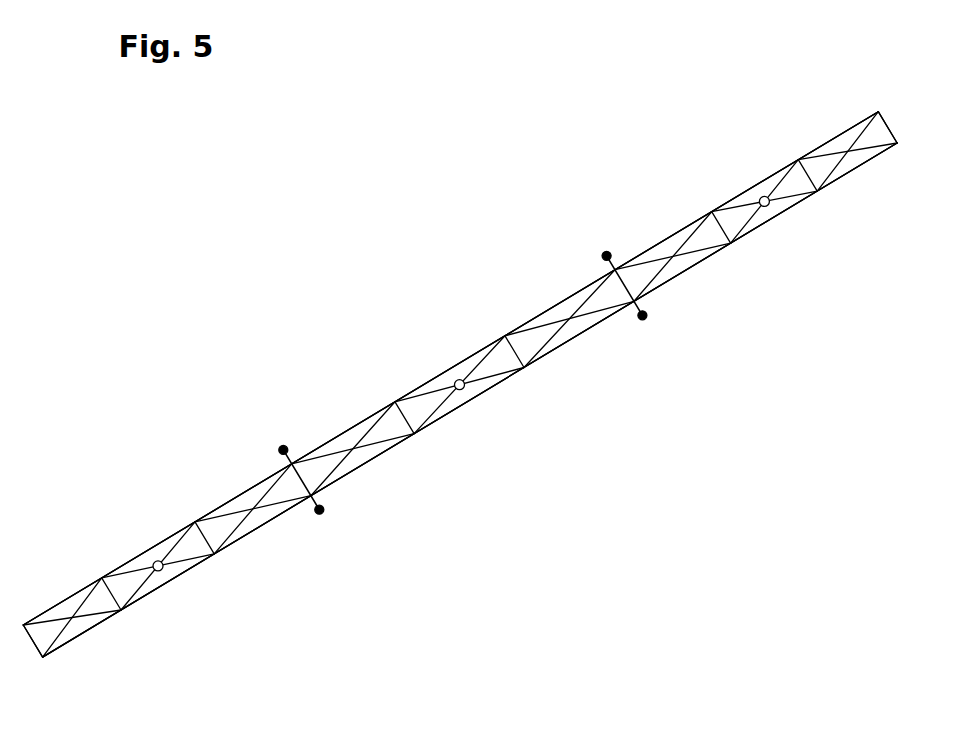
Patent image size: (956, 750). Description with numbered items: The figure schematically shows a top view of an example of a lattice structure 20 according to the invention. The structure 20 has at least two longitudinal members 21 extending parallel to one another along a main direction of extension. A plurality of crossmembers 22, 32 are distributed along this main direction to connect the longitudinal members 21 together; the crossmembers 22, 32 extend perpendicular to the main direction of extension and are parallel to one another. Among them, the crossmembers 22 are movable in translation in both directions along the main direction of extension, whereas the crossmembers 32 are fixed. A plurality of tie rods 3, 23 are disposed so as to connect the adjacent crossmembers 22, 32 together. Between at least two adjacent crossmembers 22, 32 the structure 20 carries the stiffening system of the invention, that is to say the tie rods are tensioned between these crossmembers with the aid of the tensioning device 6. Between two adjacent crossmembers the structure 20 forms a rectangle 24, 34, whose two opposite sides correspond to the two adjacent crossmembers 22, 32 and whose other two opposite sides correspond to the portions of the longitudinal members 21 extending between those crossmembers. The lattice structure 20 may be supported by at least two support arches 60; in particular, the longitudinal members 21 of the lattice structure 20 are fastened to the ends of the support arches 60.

The tie rod 3 is at (778, 176).
The tensioning device 6 is at (761, 195).
The lattice structure 20 is at (477, 313).
The longitudinal member 21 is at (822, 140).
The crossmember 22 is at (800, 188).
The tie rod 23 is at (850, 131).
The rectangle 24 is at (748, 232).
The crossmember 32 is at (880, 113).
The rectangle 34 is at (838, 180).
The support arch 60 is at (602, 256).